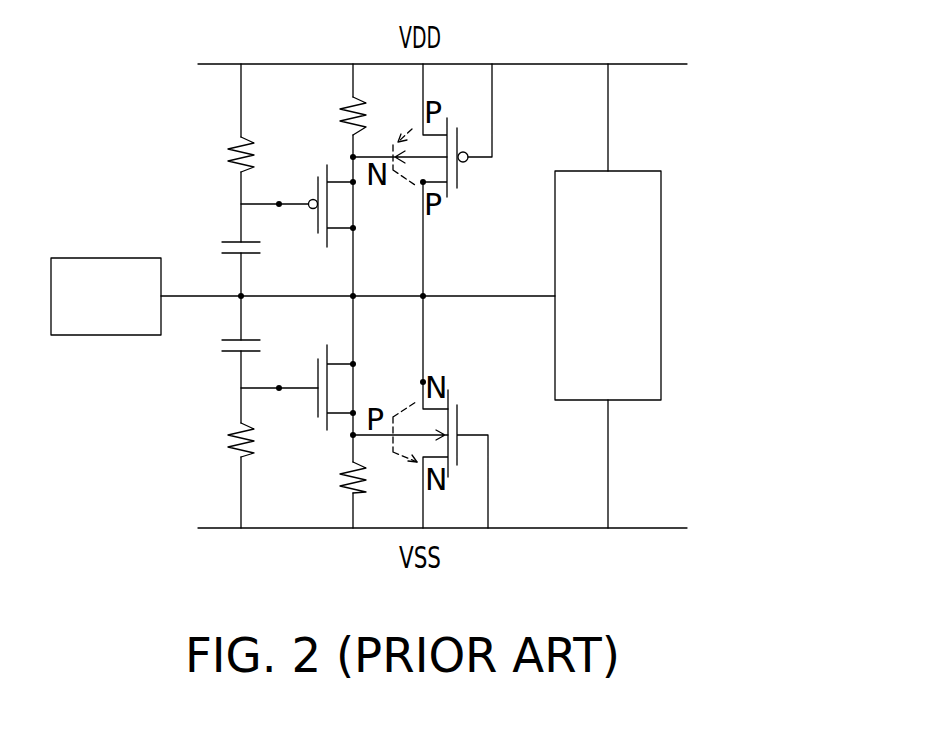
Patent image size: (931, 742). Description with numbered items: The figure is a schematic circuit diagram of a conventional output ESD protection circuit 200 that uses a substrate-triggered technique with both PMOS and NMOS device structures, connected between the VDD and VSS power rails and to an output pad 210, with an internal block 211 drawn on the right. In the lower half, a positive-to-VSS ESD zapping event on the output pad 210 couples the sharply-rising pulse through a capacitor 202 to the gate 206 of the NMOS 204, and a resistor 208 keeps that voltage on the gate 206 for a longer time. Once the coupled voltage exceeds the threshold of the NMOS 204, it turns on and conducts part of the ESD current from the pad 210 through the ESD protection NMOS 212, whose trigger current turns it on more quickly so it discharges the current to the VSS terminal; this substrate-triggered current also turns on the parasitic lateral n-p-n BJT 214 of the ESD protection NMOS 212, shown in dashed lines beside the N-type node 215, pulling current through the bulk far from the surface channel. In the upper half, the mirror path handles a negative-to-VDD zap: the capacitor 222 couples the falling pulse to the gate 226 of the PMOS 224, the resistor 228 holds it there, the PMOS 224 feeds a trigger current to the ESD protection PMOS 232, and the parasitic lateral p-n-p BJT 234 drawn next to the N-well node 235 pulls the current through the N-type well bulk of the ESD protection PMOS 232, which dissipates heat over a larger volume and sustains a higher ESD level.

The output ESD protection circuit 200 is at (707, 100).
The capacitor 202 is at (232, 360).
The NMOS 204 is at (314, 342).
The gate 206 is at (279, 406).
The resistor 208 is at (232, 458).
The output pad 210 is at (98, 258).
The internal circuit 211 is at (662, 293).
The ESD protection NMOS 212 is at (474, 382).
The parasitic lateral n-p-n BJT 214 is at (406, 383).
The N-type region node 215 is at (445, 352).
The capacitor 222 is at (232, 230).
The PMOS 224 is at (306, 147).
The gate 226 is at (274, 222).
The resistor 228 is at (232, 135).
The ESD protection PMOS 232 is at (484, 130).
The parasitic lateral p-n-p BJT 234 is at (397, 111).
The N-well node 235 is at (398, 187).